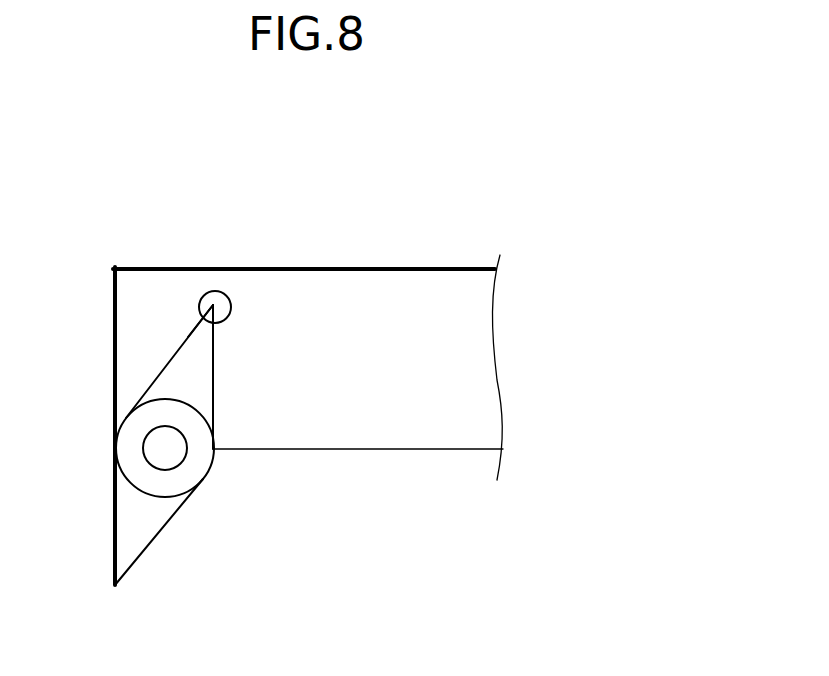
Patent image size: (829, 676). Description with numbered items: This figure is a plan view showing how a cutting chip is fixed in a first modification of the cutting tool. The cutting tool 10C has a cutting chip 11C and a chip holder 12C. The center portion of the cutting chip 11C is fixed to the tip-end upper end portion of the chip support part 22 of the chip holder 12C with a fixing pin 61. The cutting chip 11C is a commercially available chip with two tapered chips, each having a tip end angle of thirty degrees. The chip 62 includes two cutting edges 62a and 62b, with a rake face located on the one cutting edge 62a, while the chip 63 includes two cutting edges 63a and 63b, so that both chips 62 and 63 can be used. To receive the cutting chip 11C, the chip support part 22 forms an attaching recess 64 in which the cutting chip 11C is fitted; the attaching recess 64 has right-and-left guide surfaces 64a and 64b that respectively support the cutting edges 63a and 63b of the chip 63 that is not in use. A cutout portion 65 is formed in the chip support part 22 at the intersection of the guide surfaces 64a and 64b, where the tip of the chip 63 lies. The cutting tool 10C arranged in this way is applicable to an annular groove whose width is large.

The cutting tool 10C is at (316, 348).
The chip holder 12C is at (438, 267).
The chip support part 22 is at (334, 284).
The cutting chip 11C is at (170, 381).
The fixing pin 61 is at (162, 448).
The chip 62 is at (136, 554).
The cutting edge 62a is at (112, 547).
The cutting edge 62b is at (158, 535).
The chip 63 is at (159, 311).
The cutting edge 63a is at (217, 397).
The cutting edge 63b is at (177, 344).
The attaching recess 64 is at (202, 241).
The guide surface 64a is at (212, 350).
The guide surface 64b is at (197, 337).
The cutout portion 65 is at (207, 291).